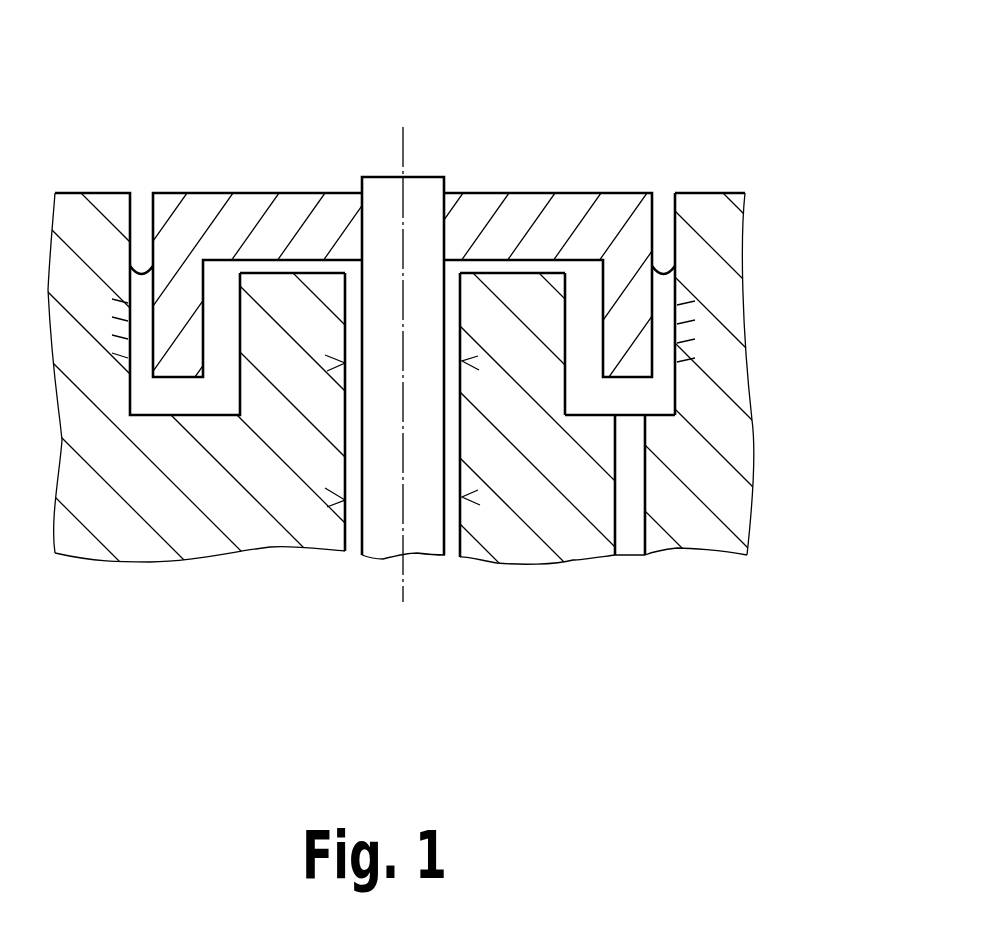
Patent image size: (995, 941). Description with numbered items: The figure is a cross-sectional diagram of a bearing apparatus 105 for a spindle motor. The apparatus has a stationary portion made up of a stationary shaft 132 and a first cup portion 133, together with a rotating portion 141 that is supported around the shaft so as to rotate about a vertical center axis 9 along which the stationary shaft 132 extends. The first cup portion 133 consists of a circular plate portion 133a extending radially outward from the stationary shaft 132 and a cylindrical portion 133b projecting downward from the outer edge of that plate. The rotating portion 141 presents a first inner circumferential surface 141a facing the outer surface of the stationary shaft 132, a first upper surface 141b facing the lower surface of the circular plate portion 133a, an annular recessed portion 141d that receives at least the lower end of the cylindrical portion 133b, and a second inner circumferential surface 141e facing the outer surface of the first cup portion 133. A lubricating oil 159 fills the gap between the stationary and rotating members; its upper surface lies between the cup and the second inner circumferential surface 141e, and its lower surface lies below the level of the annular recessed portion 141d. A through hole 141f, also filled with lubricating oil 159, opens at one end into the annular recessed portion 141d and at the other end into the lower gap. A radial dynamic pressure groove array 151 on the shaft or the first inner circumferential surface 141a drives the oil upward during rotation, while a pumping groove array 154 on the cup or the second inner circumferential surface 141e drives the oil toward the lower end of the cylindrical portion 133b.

The bearing apparatus 105 is at (163, 88).
The center axis 9 is at (402, 153).
The stationary shaft 132 is at (425, 193).
The first cup portion 133 is at (398, 223).
The circular plate portion 133a is at (307, 207).
The cylindrical portion 133b is at (177, 310).
The rotating portion 141 is at (150, 545).
The first inner circumferential surface 141a is at (460, 477).
The first upper surface 141b is at (543, 273).
The annular recessed portion 141d is at (602, 413).
The second inner circumferential surface 141e is at (663, 238).
The through hole 141f is at (630, 487).
The radial dynamic pressure groove array 151 is at (342, 370).
The pumping groove array 154 is at (704, 339).
The lubricating oil 159 is at (582, 368).